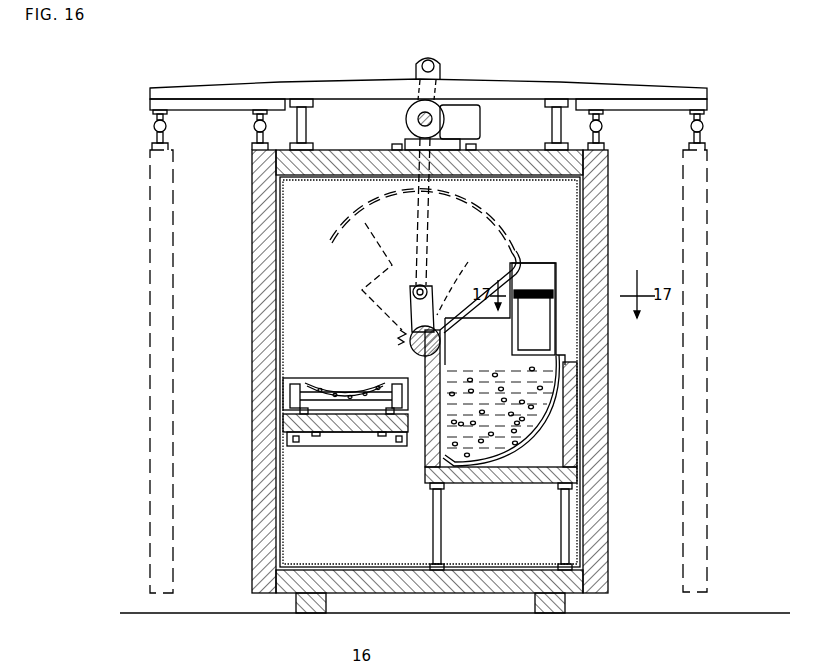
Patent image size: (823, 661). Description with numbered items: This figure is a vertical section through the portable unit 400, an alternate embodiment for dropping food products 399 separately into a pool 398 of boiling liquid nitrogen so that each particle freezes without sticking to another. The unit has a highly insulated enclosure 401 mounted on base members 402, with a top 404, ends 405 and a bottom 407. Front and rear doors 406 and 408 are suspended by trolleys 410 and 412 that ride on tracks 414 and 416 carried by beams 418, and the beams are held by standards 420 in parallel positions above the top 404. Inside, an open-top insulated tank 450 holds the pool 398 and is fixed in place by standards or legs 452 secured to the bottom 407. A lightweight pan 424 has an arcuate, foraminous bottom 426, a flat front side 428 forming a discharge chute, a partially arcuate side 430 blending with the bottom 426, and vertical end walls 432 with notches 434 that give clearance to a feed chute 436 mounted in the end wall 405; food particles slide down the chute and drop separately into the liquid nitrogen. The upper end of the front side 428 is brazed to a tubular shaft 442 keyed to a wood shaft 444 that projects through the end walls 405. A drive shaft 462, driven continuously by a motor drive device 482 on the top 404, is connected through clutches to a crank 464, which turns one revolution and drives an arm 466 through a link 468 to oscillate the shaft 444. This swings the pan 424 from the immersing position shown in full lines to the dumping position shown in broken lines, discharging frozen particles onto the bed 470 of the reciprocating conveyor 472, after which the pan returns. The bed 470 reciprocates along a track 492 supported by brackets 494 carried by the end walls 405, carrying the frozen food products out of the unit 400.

The pool of liquid nitrogen 398 is at (427, 472).
The food products 399 is at (318, 384).
The portable unit 400 is at (149, 91).
The insulated enclosure 401 is at (251, 200).
The base members 402 is at (310, 613).
The top 404 is at (523, 176).
The ends 405 is at (420, 219).
The front door 406 is at (252, 505).
The bottom 407 is at (482, 592).
The rear door 408 is at (683, 505).
The trolley 410 is at (254, 126).
The trolley 412 is at (691, 127).
The track 414 is at (152, 108).
The track 416 is at (707, 105).
The beams 418 is at (490, 85).
The standards 420 is at (306, 126).
The pans 424 is at (510, 325).
The arcuate foraminous bottoms 426 is at (476, 484).
The flat front sides 428 is at (412, 466).
The partially arcuate sides 430 is at (547, 400).
The vertical end walls 432 is at (505, 314).
The notches 434 is at (515, 340).
The feed chutes 436 is at (548, 341).
The tubular shafts 442 is at (410, 346).
The wood shaft 444 is at (410, 333).
The insulated tank 450 is at (512, 484).
The standards or legs 452 is at (560, 528).
The drive shaft 462 is at (440, 127).
The cranks 464 is at (416, 77).
The arms 466 is at (384, 276).
The links 468 is at (430, 193).
The conveyor bed 470 is at (283, 386).
The reciprocating conveyor 472 is at (298, 378).
The motor drive device 482 is at (452, 107).
The track 492 is at (378, 388).
The brackets 494 is at (290, 440).